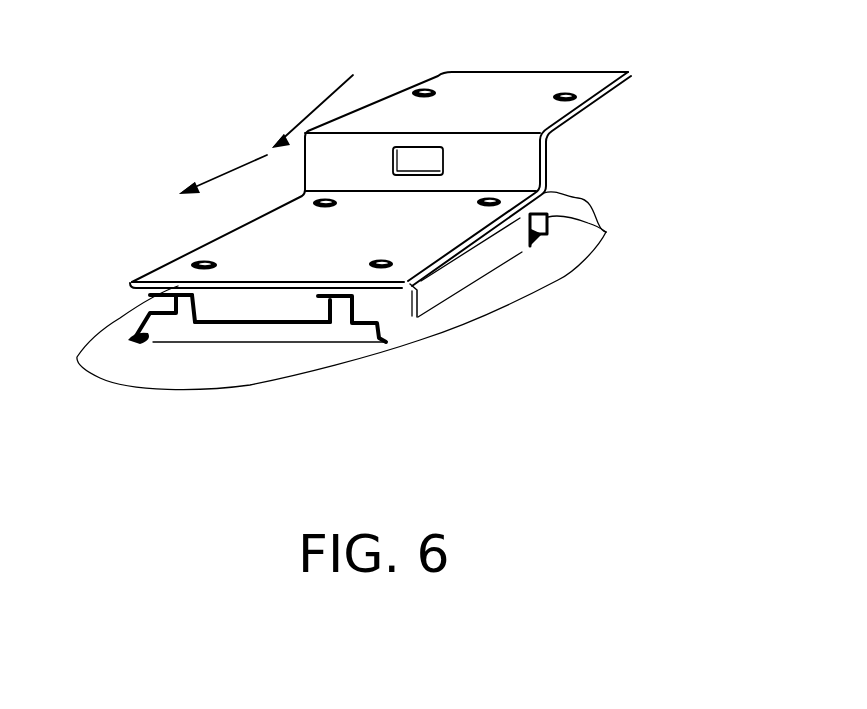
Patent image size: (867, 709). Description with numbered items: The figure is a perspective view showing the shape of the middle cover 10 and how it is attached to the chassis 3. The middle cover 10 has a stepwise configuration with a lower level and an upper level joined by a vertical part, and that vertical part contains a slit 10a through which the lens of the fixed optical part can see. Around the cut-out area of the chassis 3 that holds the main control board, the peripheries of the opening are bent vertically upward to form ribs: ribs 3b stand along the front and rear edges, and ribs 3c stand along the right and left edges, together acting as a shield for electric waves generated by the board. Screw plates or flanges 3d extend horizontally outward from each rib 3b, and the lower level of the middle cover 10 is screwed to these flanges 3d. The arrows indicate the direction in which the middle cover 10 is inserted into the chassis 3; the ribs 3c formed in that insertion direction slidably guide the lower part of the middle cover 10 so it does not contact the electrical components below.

The middle cover 10 is at (492, 88).
The slit 10a is at (442, 163).
The chassis 3 is at (553, 258).
The rib 3b is at (604, 231).
The rib 3c is at (480, 268).
The screw plate or flange 3d is at (183, 318).